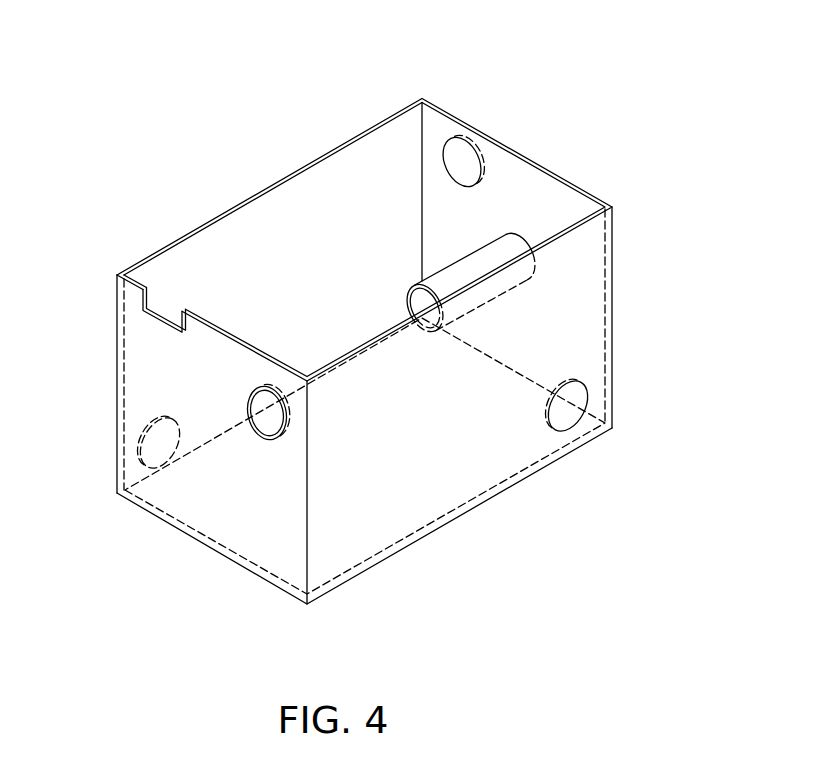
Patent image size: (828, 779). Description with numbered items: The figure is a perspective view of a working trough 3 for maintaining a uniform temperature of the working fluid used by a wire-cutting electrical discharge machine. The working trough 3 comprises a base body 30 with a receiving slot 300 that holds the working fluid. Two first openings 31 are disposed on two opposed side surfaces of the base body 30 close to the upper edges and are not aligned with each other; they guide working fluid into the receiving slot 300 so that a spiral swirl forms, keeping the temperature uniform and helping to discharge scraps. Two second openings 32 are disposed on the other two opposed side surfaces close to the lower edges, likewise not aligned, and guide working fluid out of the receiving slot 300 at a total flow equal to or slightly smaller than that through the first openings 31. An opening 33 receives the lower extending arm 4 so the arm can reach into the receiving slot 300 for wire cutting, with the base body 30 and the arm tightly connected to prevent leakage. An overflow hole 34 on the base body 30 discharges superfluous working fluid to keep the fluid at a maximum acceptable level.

The working trough 3 is at (178, 107).
The base body 30 is at (382, 118).
The receiving slot 300 is at (295, 263).
The lower extending arm 4 is at (455, 277).
The first opening 31 is at (463, 160).
The second opening 32 is at (158, 443).
The opening 33 is at (508, 246).
The overflow hole 34 is at (160, 305).